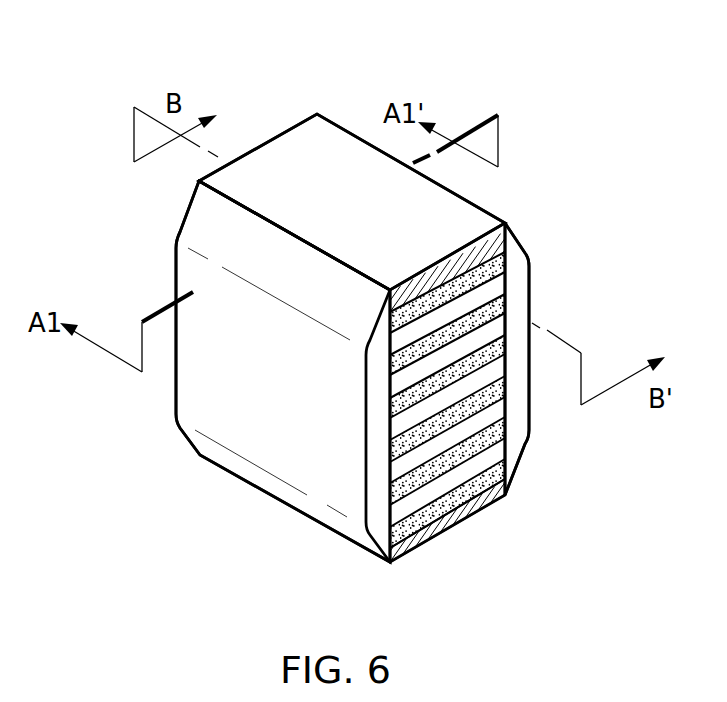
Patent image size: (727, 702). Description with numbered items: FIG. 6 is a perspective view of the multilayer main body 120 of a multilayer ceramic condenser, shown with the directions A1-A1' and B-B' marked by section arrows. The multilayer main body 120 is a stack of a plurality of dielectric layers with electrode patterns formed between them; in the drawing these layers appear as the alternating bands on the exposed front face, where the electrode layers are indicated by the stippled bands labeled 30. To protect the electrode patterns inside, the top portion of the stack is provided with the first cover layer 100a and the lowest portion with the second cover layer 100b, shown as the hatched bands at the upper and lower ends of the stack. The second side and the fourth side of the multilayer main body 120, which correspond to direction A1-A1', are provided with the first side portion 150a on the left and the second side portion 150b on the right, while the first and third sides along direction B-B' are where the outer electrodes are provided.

The multilayer main body 120 is at (362, 97).
The first cover layer 100a is at (313, 150).
The second cover layer 100b is at (442, 520).
The first side portion 150a is at (200, 383).
The second side portion 150b is at (517, 283).
The electrode assembly 30 is at (467, 485).